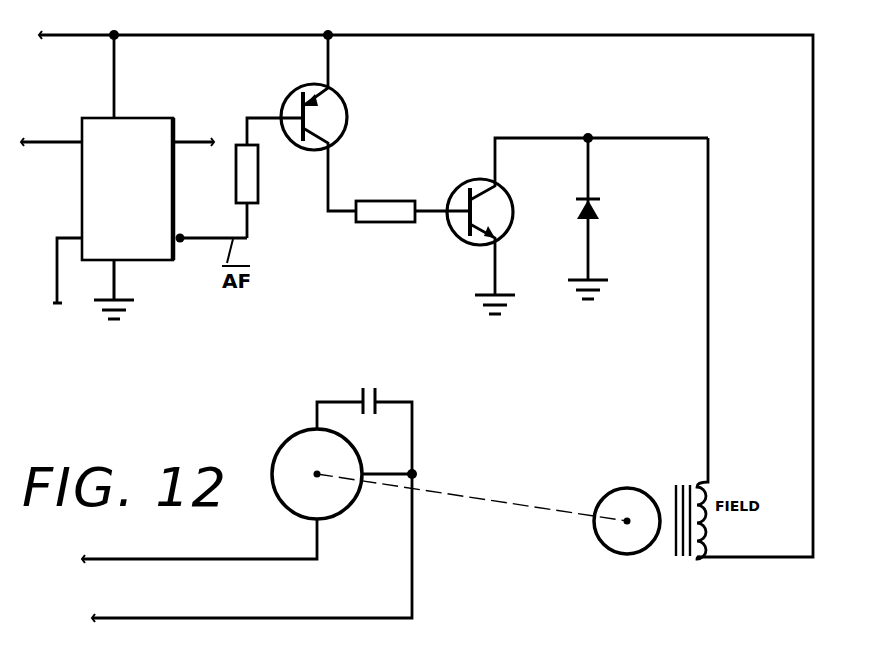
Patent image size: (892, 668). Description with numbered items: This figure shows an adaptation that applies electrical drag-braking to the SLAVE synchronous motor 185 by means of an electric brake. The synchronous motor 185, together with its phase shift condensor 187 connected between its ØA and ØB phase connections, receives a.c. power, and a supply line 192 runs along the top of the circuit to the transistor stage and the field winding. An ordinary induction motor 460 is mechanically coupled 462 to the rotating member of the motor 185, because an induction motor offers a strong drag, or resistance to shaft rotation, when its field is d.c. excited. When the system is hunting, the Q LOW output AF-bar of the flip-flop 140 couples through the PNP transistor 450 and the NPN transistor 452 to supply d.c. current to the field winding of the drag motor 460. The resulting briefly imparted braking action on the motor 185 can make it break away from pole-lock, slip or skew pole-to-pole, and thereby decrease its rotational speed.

The supply line 192 is at (157, 36).
The flip-flop 140 is at (120, 134).
The PNP transistor 450 is at (348, 126).
The NPN transistor 452 is at (454, 191).
The SLAVE synchronous motor 185 is at (277, 459).
The phase shift condensor 187 is at (361, 398).
The mechanical coupling 462 is at (556, 508).
The induction motor 460 is at (659, 477).